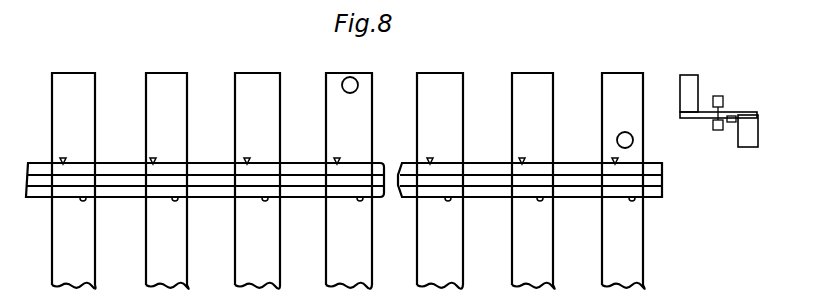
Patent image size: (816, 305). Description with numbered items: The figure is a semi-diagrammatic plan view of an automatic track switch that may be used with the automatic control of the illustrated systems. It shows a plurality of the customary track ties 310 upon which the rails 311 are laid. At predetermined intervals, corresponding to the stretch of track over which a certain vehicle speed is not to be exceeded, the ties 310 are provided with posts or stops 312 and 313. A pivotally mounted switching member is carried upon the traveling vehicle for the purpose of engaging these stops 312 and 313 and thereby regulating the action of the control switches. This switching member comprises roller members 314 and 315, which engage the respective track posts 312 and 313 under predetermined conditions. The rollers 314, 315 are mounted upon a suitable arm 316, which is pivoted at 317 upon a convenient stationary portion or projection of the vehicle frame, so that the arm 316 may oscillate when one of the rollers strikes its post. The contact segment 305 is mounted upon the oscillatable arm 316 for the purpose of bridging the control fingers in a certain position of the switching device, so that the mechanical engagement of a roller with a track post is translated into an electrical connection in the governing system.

The contact segment 305 is at (738, 113).
The track ties 310 is at (238, 94).
The rails 311 is at (205, 172).
The post or stop 312 is at (352, 78).
The post or stop 313 is at (617, 137).
The roller member 314 is at (690, 80).
The roller member 315 is at (745, 142).
The arm 316 is at (704, 116).
The pivot 317 is at (719, 97).